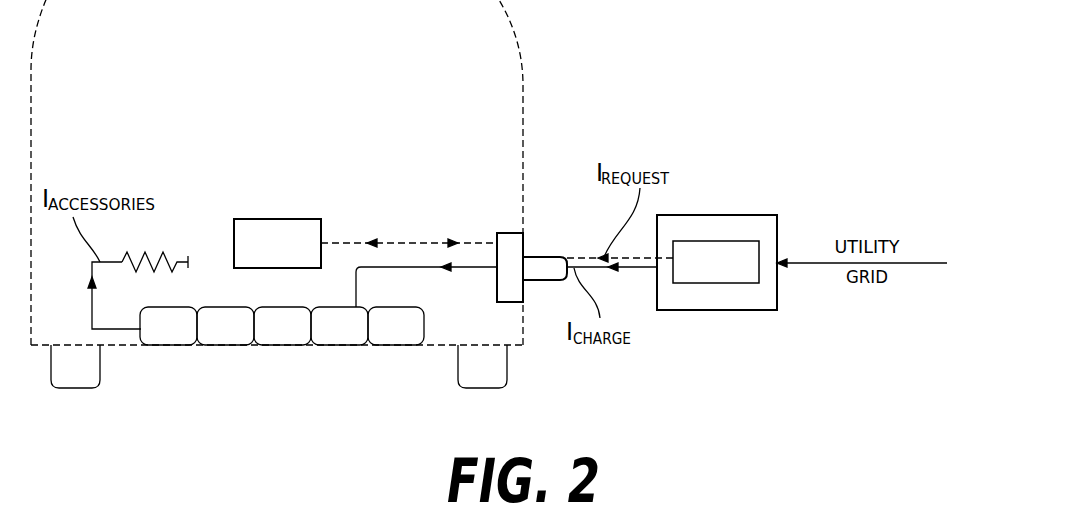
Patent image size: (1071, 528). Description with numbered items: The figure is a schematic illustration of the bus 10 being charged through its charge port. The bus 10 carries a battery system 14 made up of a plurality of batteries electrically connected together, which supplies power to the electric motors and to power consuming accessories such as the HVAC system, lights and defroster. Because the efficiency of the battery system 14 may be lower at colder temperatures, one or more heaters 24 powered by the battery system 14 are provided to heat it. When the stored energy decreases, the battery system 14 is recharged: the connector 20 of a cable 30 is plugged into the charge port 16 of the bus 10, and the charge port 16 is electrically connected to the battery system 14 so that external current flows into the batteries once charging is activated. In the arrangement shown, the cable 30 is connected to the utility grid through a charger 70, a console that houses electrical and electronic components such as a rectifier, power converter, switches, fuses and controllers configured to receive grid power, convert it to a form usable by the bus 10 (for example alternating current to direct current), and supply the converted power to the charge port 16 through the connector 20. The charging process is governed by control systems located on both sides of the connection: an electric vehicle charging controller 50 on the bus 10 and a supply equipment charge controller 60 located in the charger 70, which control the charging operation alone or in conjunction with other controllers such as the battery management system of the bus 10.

The bus 10 is at (95, 79).
The battery system 14 is at (224, 358).
The charge port 16 is at (508, 233).
The connector 20 is at (552, 260).
The heater 24 is at (163, 258).
The cable 30 is at (630, 268).
The electric vehicle charging controller 50 is at (267, 255).
The supply equipment charge controller 60 is at (706, 273).
The charger 70 is at (693, 215).